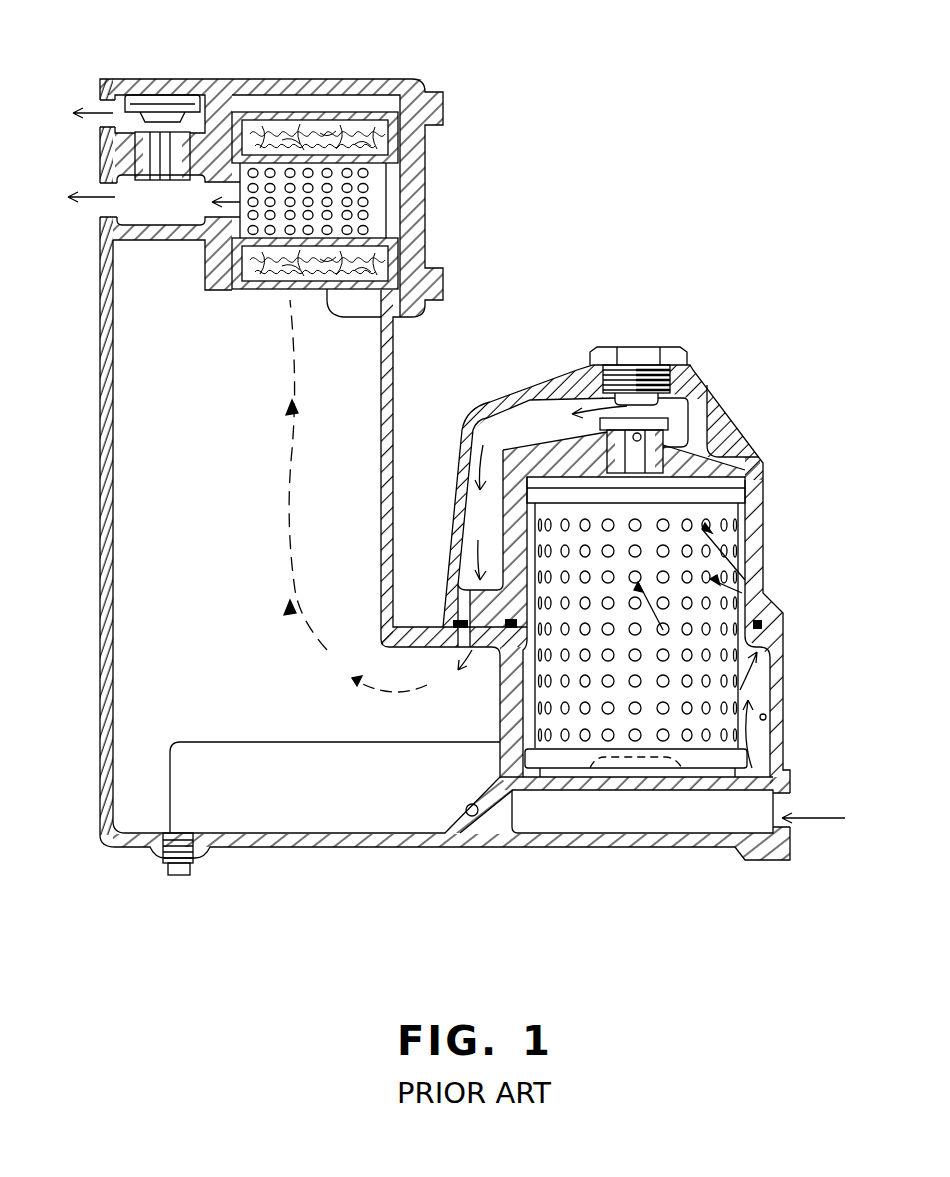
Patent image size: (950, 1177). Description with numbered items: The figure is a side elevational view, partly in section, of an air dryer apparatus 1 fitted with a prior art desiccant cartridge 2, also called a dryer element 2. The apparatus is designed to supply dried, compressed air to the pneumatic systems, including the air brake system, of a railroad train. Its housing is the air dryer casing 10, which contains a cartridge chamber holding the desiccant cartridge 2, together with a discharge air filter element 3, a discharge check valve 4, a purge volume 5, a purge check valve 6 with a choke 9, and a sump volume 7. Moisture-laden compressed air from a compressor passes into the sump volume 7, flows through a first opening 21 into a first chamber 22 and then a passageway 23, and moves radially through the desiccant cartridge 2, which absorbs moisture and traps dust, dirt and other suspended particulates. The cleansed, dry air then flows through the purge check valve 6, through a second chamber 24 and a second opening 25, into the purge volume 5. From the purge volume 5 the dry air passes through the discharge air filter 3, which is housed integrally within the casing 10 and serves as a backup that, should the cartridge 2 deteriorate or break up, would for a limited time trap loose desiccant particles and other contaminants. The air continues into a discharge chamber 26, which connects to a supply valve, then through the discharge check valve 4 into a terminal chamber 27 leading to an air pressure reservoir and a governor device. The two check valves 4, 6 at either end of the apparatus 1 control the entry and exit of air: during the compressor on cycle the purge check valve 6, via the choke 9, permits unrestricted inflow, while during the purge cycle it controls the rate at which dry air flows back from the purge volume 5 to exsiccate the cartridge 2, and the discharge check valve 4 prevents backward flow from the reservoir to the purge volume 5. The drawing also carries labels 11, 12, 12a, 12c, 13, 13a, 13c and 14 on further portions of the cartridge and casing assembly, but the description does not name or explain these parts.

The air dryer apparatus 1 is at (456, 933).
The desiccant cartridge 2 is at (772, 676).
The discharge air filter element 3 is at (262, 190).
The discharge check valve 4 is at (177, 190).
The purge volume 5 is at (122, 571).
The purge check valve 6 is at (656, 424).
The sump volume 7 is at (682, 830).
The choke 9 is at (667, 450).
The air dryer casing 10 is at (113, 395).
The seal 11 is at (762, 628).
The filter 12 is at (693, 493).
The filter ring 12a is at (740, 497).
The filter lid 12c is at (727, 476).
The base 13 is at (570, 760).
The bottom plate 13a is at (752, 767).
The opening 13c is at (716, 770).
The perforations 14 is at (742, 593).
The first opening 21 is at (760, 781).
The first chamber 22 is at (768, 718).
The passageway 23 is at (744, 540).
The second chamber 24 is at (497, 412).
The second opening 25 is at (470, 590).
The discharge chamber 26 is at (118, 216).
The terminal chamber 27 is at (128, 108).